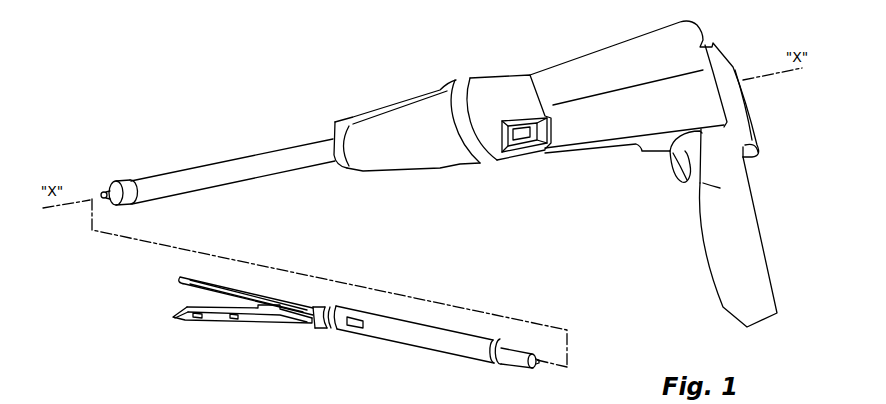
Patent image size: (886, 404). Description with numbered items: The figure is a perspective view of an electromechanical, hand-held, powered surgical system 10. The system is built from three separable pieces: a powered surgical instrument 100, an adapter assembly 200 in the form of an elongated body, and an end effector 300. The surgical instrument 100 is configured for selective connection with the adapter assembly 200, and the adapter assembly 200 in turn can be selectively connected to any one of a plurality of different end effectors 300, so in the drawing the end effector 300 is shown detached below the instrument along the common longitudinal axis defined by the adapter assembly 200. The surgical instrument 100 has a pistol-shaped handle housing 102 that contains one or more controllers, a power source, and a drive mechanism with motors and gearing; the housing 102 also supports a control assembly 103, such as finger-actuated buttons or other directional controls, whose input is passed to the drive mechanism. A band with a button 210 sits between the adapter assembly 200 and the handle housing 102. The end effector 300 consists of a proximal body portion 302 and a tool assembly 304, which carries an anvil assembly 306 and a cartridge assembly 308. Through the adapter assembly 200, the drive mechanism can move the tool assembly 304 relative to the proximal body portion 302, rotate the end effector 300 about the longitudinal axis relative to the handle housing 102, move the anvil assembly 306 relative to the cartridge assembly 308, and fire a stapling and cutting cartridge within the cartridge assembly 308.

The electromechanical surgical system 10 is at (301, 60).
The surgical instrument 100 is at (613, 57).
The handle housing 102 is at (752, 223).
The control assembly 103 is at (687, 184).
The adapter assembly 200 is at (380, 122).
The release button band 210 is at (500, 83).
The end effector 300 is at (394, 308).
The proximal body portion 302 is at (450, 330).
The tool assembly 304 is at (236, 333).
The anvil assembly 306 is at (180, 276).
The cartridge assembly 308 is at (190, 323).